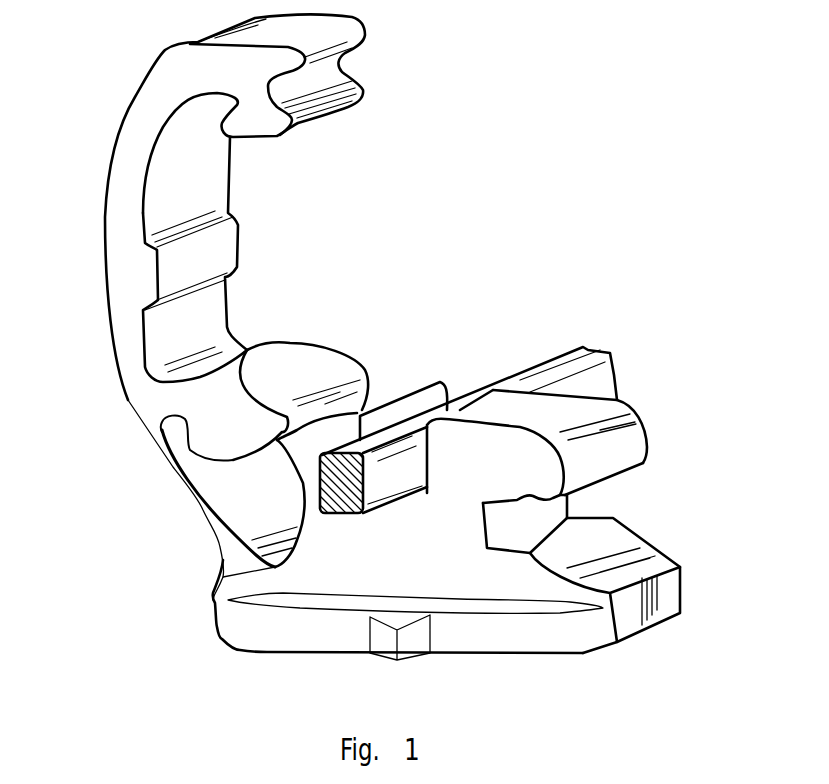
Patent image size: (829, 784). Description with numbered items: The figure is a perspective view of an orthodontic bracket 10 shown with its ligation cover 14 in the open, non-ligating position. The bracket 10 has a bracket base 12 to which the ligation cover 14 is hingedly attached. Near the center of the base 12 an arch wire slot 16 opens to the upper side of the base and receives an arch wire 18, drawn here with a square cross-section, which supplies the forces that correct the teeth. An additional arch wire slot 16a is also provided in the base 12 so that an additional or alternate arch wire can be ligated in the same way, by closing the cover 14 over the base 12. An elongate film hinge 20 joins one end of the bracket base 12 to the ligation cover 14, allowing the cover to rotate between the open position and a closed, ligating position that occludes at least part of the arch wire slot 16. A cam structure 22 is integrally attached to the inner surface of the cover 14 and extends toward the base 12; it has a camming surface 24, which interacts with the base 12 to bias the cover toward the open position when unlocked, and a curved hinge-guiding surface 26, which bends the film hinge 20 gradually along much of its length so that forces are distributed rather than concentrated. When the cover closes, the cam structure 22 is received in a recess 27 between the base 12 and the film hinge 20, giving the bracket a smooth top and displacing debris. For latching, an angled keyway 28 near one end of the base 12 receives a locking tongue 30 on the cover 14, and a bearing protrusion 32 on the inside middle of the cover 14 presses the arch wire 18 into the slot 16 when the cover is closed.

The orthodontic bracket 10 is at (634, 221).
The bracket base 12 is at (477, 577).
The ligation cover 14 is at (137, 147).
The arch wire slot 16 is at (472, 368).
The additional arch wire slot 16a is at (602, 504).
The arch wire 18 is at (522, 373).
The elongate film hinge 20 is at (200, 497).
The cam structure 22 is at (242, 407).
The camming surface 24 is at (273, 393).
The hinge-guiding surface 26 is at (235, 460).
The recess 27 is at (260, 502).
The angled keyway 28 is at (621, 477).
The locking tongue 30 is at (221, 121).
The bearing protrusion 32 is at (175, 272).